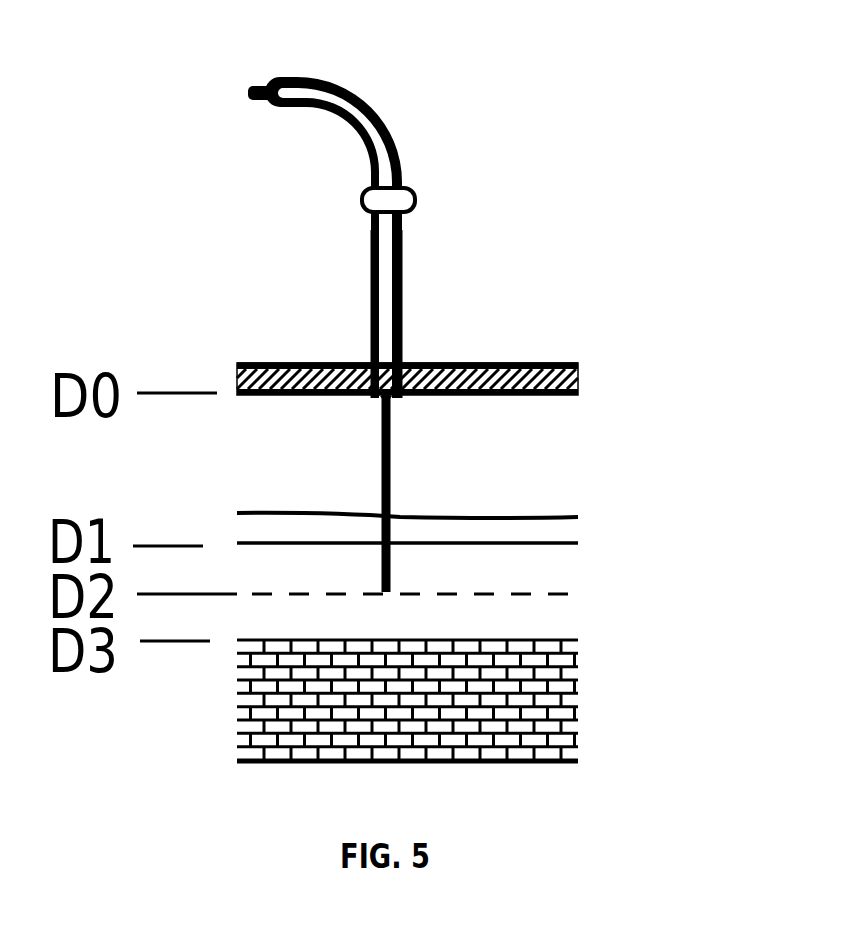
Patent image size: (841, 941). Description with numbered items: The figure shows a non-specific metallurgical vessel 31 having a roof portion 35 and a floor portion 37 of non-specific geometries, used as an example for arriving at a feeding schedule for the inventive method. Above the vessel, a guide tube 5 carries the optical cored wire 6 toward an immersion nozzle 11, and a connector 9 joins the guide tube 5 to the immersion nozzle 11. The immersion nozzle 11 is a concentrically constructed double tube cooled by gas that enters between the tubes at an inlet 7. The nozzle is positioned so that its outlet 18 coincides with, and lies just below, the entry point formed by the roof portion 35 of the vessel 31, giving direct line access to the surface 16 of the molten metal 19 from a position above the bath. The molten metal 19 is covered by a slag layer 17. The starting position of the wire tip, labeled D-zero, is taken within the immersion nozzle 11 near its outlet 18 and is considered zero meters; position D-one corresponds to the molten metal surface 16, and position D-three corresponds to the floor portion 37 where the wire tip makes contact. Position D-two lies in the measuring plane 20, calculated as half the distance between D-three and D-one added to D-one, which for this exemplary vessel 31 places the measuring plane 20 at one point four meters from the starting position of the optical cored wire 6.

The guide tube 5 is at (372, 102).
The optical cored wire 6 is at (250, 90).
The inlet 7 is at (363, 223).
The connector 9 is at (413, 193).
The immersion nozzle 11 is at (395, 273).
The surface of the molten metal 16 is at (563, 540).
The slag layer 17 is at (522, 512).
The outlet of the immersion nozzle 18 is at (310, 363).
The molten metal 19 is at (255, 612).
The measuring plane 20 is at (577, 593).
The metallurgical vessel 31 is at (582, 373).
The roof portion 35 is at (480, 363).
The floor portion 37 is at (523, 710).